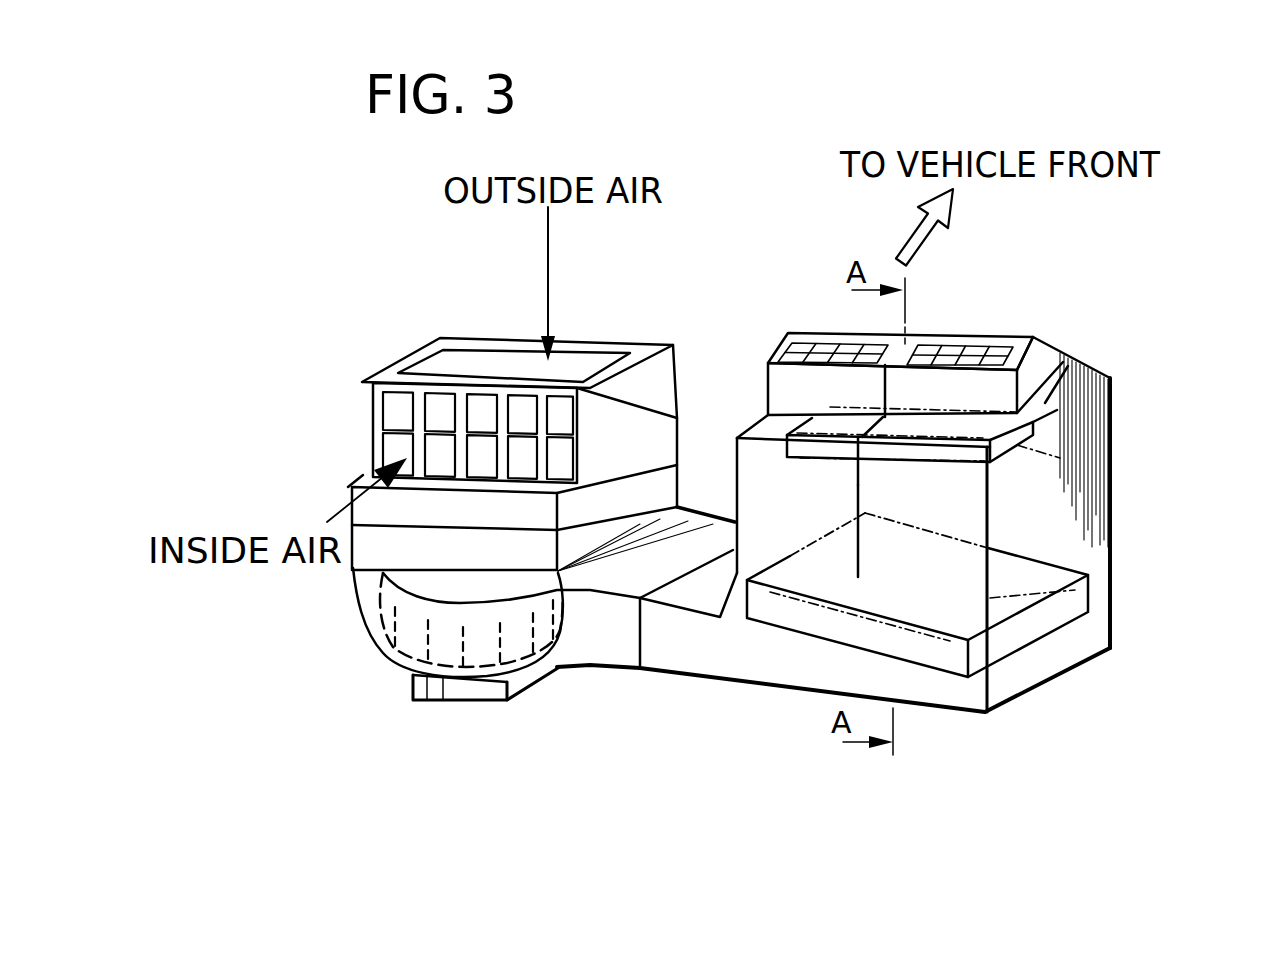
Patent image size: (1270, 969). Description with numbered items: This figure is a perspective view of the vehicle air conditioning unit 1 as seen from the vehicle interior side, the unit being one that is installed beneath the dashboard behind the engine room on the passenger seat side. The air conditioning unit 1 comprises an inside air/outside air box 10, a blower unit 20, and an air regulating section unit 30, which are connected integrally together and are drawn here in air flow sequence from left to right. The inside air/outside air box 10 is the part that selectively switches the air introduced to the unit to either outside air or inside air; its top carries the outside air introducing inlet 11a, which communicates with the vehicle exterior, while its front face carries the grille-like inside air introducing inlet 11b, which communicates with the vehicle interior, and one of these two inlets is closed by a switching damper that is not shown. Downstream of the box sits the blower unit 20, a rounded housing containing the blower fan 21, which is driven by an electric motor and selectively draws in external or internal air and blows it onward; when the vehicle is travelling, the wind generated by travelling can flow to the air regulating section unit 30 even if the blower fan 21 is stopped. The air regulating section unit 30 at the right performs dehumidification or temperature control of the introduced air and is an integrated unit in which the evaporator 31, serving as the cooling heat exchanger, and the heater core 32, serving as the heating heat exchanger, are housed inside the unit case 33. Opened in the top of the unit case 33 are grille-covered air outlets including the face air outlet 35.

The air conditioning unit 1 is at (742, 248).
The inside air/outside air box 10 is at (355, 354).
The outside air introducing inlet 11a is at (483, 357).
The inside air introducing inlet 11b is at (400, 413).
The blower unit 20 is at (376, 679).
The blower fan 21 is at (443, 705).
The air regulating section unit 30 is at (1098, 345).
The evaporator 31 is at (993, 548).
The heater core 32 is at (1030, 442).
The unit case 33 is at (1113, 605).
The face air outlet 35 is at (977, 343).